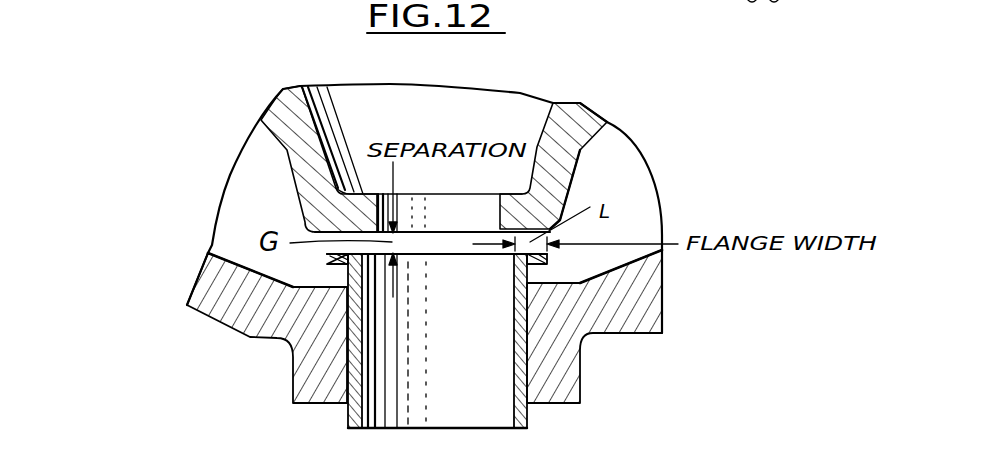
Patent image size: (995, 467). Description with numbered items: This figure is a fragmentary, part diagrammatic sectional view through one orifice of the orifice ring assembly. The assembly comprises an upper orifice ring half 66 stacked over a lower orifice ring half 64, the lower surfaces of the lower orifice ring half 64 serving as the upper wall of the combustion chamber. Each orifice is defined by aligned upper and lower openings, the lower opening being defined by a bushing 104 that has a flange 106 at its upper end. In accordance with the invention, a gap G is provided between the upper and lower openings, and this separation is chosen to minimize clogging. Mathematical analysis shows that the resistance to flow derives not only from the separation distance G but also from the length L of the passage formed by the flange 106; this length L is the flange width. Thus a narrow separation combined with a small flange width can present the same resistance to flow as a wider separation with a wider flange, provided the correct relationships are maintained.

The upper orifice ring half 66 is at (584, 122).
The lower orifice ring half 64 is at (662, 294).
The bushing 104 is at (527, 413).
The flange 106 is at (527, 263).